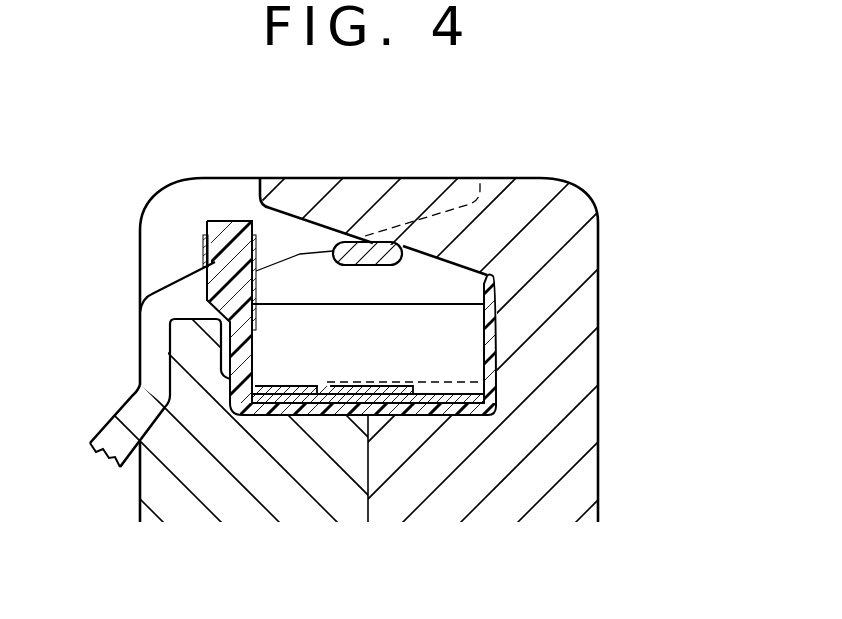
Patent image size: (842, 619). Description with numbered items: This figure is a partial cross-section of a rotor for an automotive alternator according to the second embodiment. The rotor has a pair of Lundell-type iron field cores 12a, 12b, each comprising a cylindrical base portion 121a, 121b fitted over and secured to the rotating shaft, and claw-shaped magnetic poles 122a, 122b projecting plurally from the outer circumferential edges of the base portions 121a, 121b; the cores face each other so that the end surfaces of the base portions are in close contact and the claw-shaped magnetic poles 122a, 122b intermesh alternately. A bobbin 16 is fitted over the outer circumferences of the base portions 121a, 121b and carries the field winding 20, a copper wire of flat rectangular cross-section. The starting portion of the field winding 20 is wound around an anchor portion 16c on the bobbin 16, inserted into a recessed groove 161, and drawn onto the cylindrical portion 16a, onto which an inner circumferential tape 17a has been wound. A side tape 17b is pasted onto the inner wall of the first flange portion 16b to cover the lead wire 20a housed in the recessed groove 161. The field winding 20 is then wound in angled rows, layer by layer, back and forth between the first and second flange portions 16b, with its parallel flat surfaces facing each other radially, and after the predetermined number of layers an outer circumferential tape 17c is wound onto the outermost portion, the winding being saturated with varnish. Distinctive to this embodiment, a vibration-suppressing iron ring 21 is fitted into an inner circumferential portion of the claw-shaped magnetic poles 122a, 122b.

The field core 12a is at (132, 504).
The field core 12b is at (604, 462).
The cylindrical base portion 121a is at (260, 488).
The cylindrical base portion 121b is at (450, 497).
The claw-shaped magnetic pole 122a is at (205, 190).
The claw-shaped magnetic pole 122b is at (463, 185).
The bobbin 16 is at (478, 282).
The cylindrical portion 16a is at (382, 414).
The flange portion 16b is at (210, 293).
The anchor portion 16c is at (200, 215).
The recessed groove 161 is at (213, 343).
The inner circumferential tape 17a is at (453, 395).
The side tape 17b is at (253, 362).
The outer circumferential tape 17c is at (418, 304).
The field winding 20 is at (367, 330).
The lead wire 20a is at (256, 272).
The vibration-suppressing iron ring 21 is at (377, 248).